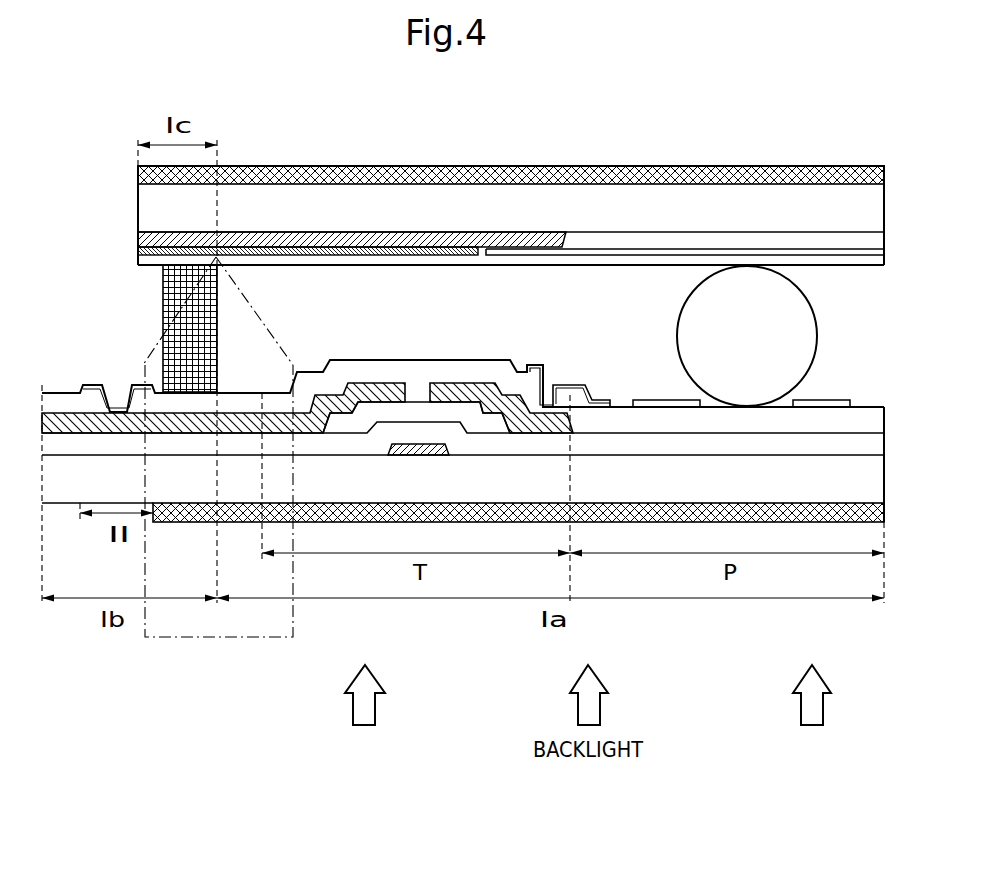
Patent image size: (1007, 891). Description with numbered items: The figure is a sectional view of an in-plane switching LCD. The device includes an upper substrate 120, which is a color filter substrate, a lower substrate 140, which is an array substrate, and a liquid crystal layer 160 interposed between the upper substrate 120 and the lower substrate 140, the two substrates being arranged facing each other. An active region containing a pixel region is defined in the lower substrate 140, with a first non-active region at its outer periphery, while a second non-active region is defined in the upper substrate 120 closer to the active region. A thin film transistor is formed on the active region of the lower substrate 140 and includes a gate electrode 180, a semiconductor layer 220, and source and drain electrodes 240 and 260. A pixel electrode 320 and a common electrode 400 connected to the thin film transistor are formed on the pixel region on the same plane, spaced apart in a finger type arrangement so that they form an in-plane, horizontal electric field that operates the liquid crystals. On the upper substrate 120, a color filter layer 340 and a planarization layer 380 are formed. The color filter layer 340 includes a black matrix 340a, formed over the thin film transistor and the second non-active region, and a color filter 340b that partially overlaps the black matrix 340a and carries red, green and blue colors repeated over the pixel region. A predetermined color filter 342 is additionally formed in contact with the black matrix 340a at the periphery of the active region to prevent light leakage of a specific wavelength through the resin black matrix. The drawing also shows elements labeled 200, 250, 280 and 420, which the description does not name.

The upper substrate 120 is at (888, 166).
The lower substrate 140 is at (888, 407).
The liquid crystal layer 160 is at (888, 265).
The gate electrode 180 is at (416, 455).
The insulating substrate 200 is at (518, 447).
The semiconductor layer 220 is at (348, 423).
The source electrode 240 is at (390, 383).
The passivation layer 250 is at (258, 402).
The drain electrode 260 is at (465, 383).
The semiconductor layer 280 is at (415, 372).
The pixel electrode 320 is at (573, 383).
The color filter layer 340 is at (511, 158).
The black matrix 340a is at (547, 233).
The color filter 340b is at (603, 240).
The predetermined color filter 342 is at (138, 256).
The planarization layer 380 is at (308, 262).
The common electrode 400 is at (658, 400).
The spacer 420 is at (685, 333).